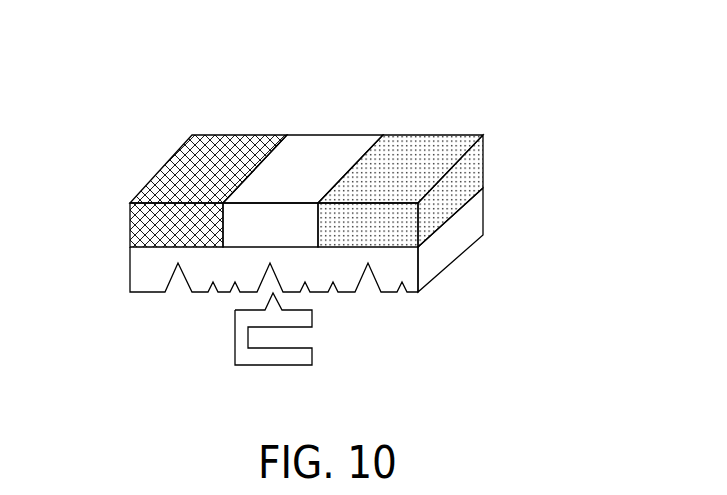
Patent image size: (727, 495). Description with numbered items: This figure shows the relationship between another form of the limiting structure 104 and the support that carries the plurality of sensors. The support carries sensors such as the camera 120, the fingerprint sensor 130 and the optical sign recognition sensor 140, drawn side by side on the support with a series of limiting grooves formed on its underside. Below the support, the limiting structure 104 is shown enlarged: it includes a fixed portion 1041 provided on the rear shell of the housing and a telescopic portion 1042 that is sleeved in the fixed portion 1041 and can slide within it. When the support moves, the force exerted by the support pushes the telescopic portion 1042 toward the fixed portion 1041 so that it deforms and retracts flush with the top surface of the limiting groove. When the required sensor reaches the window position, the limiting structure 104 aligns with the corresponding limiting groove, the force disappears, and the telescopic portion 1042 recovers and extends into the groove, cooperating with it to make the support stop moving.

The camera 120 is at (187, 176).
The fingerprint sensor 130 is at (315, 160).
The optical sign recognition sensor 140 is at (455, 185).
The limiting structure 104 is at (297, 280).
The fixed portion 1041 is at (248, 355).
The telescopic portion 1042 is at (248, 318).